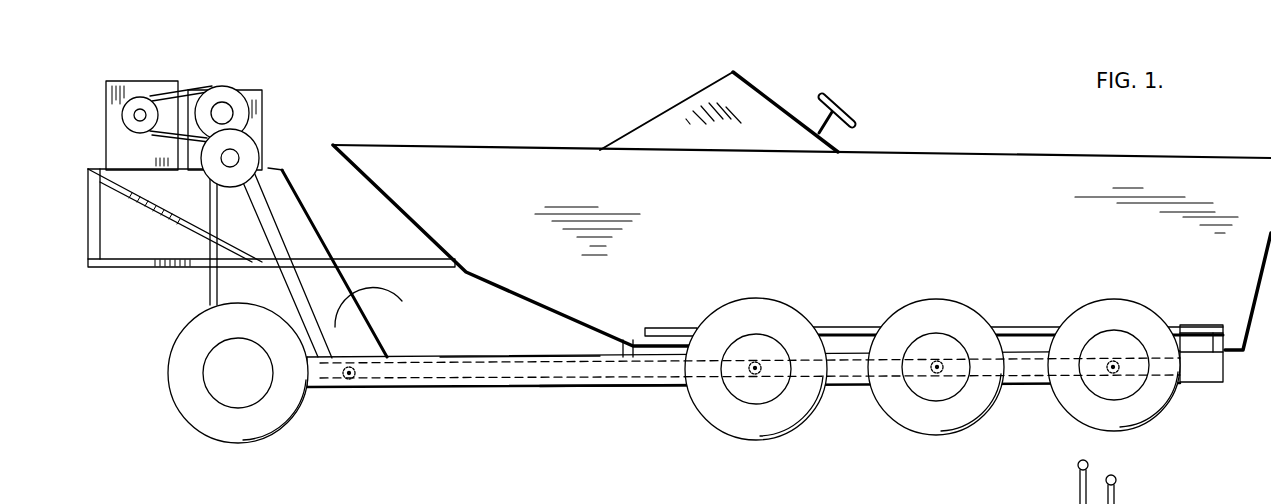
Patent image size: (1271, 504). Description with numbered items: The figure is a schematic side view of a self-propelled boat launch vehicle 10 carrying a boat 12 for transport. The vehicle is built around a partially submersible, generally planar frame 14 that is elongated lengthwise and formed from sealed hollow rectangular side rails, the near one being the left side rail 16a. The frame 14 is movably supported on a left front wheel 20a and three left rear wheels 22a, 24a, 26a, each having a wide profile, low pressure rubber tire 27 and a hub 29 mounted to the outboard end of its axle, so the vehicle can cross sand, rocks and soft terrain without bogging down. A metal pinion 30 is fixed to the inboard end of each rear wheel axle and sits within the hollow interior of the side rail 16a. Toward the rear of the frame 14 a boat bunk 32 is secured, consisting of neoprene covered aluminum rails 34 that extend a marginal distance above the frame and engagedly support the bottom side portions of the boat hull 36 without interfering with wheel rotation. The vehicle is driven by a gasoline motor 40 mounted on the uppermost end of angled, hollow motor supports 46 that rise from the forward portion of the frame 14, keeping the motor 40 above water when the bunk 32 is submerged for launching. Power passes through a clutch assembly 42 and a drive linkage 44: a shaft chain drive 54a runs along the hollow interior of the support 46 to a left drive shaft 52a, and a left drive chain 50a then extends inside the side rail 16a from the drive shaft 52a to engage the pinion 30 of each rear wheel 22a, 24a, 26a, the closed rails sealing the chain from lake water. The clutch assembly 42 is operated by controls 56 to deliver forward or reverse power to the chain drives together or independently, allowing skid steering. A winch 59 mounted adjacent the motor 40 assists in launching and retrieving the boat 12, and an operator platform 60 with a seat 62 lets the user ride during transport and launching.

The self-propelled boat launch vehicle 10 is at (365, 238).
The boat 12 is at (1018, 168).
The frame 14 is at (452, 346).
The left side rail 16a is at (606, 386).
The left front wheel 20a is at (198, 414).
The left rear wheel 22a is at (780, 422).
The left rear wheel 24a is at (940, 427).
The left rear wheel 26a is at (1075, 410).
The rubber tire 27 is at (227, 334).
The hub 29 is at (227, 382).
The pinion 30 is at (747, 377).
The boat bunk 32 is at (673, 316).
The bunk rail 34 is at (848, 325).
The boat hull 36 is at (1015, 283).
The motor 40 is at (178, 72).
The clutch assembly 42 is at (266, 96).
The drive linkage 44 is at (374, 388).
The motor support 46 is at (274, 166).
The left drive chain 50a is at (512, 384).
The left drive shaft 52a is at (346, 388).
The left shaft chain drive 54a is at (402, 301).
The controls 56 is at (1080, 488).
The winch 59 is at (186, 147).
The operator platform 60 is at (140, 258).
The seat 62 is at (1233, 492).